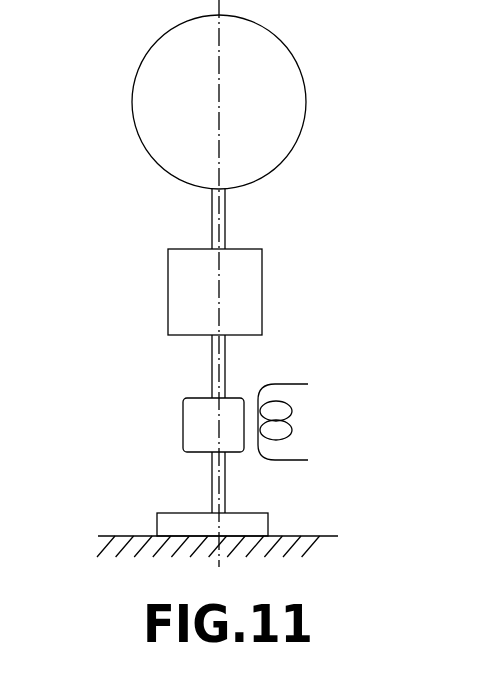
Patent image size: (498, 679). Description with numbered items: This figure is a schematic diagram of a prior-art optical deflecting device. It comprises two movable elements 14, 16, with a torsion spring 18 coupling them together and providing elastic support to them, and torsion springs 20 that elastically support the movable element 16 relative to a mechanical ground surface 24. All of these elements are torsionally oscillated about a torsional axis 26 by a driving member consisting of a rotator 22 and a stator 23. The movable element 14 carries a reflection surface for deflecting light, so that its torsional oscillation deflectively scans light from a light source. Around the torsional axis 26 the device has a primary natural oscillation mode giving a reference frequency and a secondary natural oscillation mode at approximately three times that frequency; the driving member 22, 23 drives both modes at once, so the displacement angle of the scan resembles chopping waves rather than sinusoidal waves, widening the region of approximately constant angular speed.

The movable element 14 is at (182, 117).
The movable element 16 is at (206, 300).
The torsion spring 18 is at (210, 227).
The torsion springs 20 is at (208, 367).
The rotator 22 is at (228, 437).
The stator 23 is at (299, 422).
The mechanical ground surface 24 is at (258, 525).
The torsional axis 26 is at (220, 1).